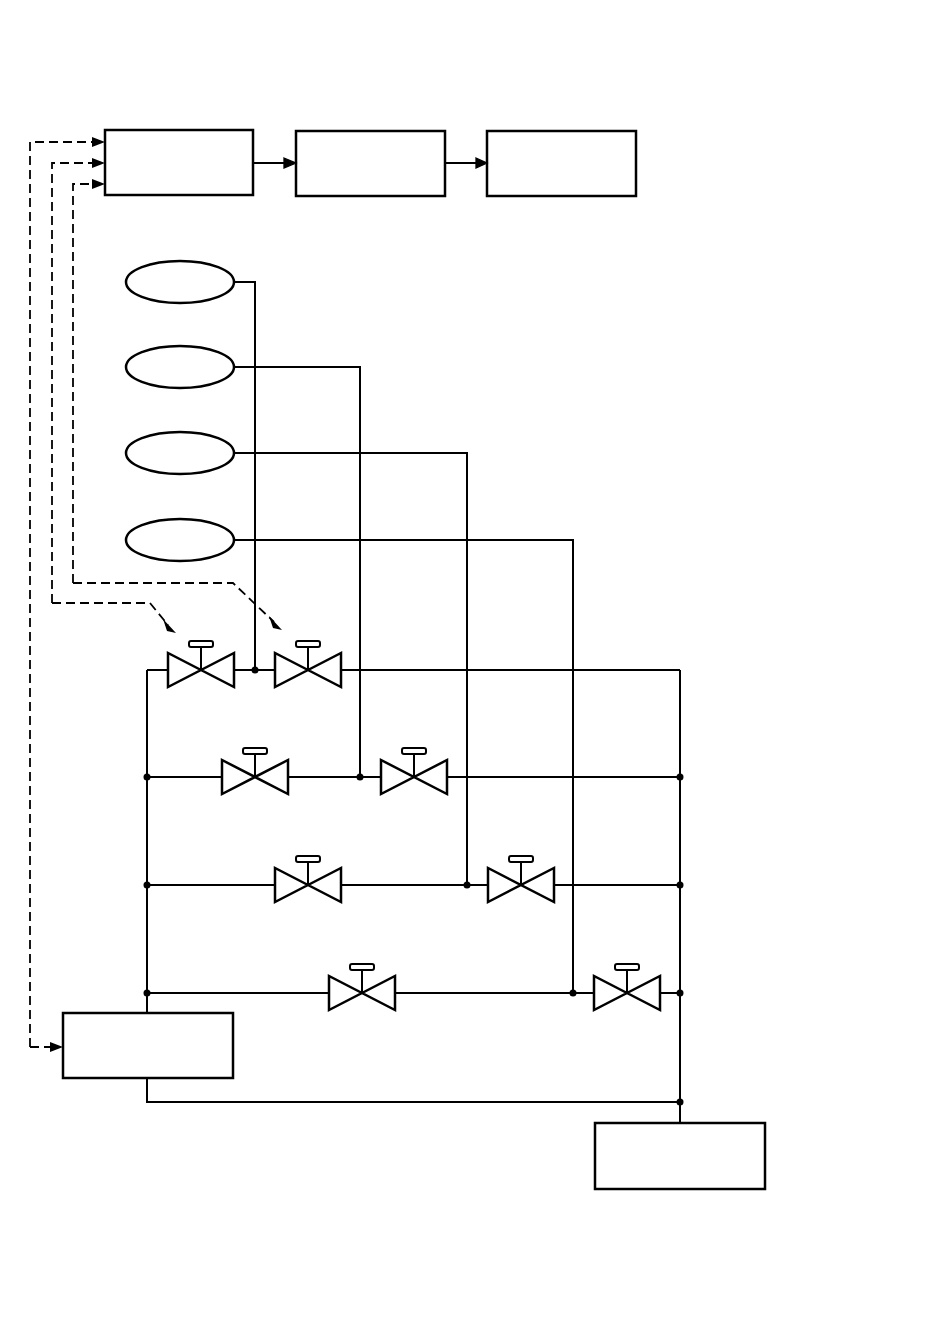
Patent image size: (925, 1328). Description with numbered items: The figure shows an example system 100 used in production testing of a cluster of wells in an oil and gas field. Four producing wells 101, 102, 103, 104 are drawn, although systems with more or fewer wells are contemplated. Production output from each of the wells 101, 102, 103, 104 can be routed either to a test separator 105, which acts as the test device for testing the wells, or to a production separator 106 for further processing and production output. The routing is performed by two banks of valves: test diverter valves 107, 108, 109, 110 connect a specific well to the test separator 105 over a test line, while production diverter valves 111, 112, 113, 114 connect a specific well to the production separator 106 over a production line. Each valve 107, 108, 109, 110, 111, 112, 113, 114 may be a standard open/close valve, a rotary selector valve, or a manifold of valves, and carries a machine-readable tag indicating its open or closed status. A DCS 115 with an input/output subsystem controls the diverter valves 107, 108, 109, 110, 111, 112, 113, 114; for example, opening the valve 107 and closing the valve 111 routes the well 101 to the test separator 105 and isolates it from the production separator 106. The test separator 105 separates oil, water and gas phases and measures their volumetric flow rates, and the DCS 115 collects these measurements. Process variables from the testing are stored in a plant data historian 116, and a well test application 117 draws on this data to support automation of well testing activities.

The system 100 is at (70, 58).
The well 101 is at (131, 269).
The well 102 is at (131, 355).
The well 103 is at (131, 441).
The well 104 is at (131, 528).
The test separator 105 is at (106, 1080).
The production separator 106 is at (766, 1154).
The test diverter valve 107 is at (216, 682).
The test diverter valve 108 is at (270, 790).
The test diverter valve 109 is at (322, 898).
The test diverter valve 110 is at (376, 1006).
The production diverter valve 111 is at (298, 682).
The production diverter valve 112 is at (404, 790).
The production diverter valve 113 is at (511, 898).
The production diverter valve 114 is at (617, 1006).
The DCS 115 is at (168, 129).
The plant data historian 116 is at (360, 130).
The well test application 117 is at (562, 130).